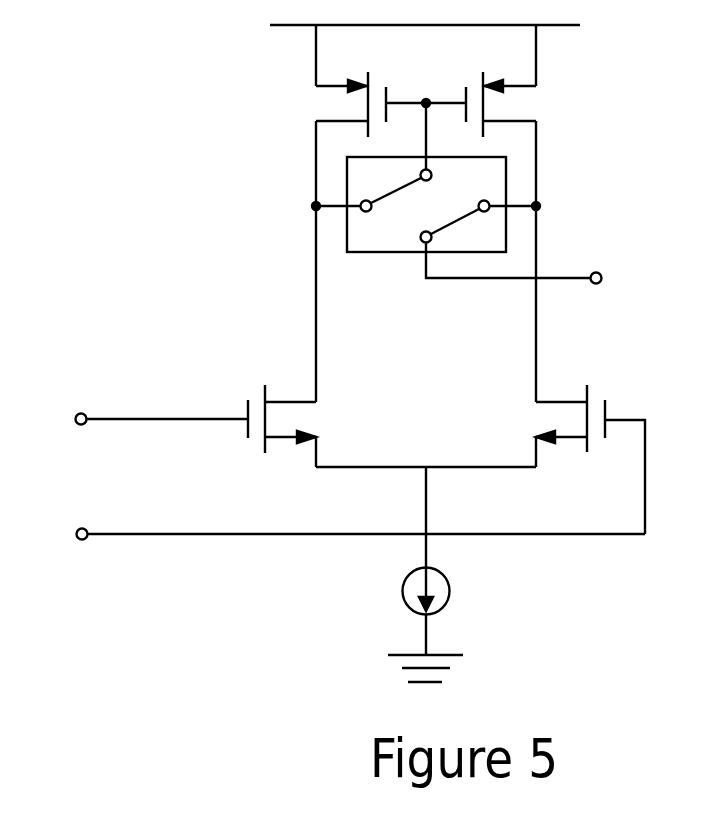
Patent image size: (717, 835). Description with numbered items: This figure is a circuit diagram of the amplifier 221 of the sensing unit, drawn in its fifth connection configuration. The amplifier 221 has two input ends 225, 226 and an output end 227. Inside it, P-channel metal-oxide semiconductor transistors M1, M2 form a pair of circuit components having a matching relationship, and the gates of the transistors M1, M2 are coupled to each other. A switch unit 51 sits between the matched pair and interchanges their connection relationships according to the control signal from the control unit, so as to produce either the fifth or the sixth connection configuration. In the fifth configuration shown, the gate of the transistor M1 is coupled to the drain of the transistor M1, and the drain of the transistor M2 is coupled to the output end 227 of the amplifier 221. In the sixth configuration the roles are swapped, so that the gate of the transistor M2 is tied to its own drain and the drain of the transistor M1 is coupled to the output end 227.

The amplifier 221 is at (362, 380).
The switch unit 51 is at (506, 183).
The input end 225 is at (80, 413).
The input end 226 is at (81, 528).
The output end 227 is at (600, 273).
The PMOS transistor M1 is at (351, 104).
The PMOS transistor M2 is at (505, 104).